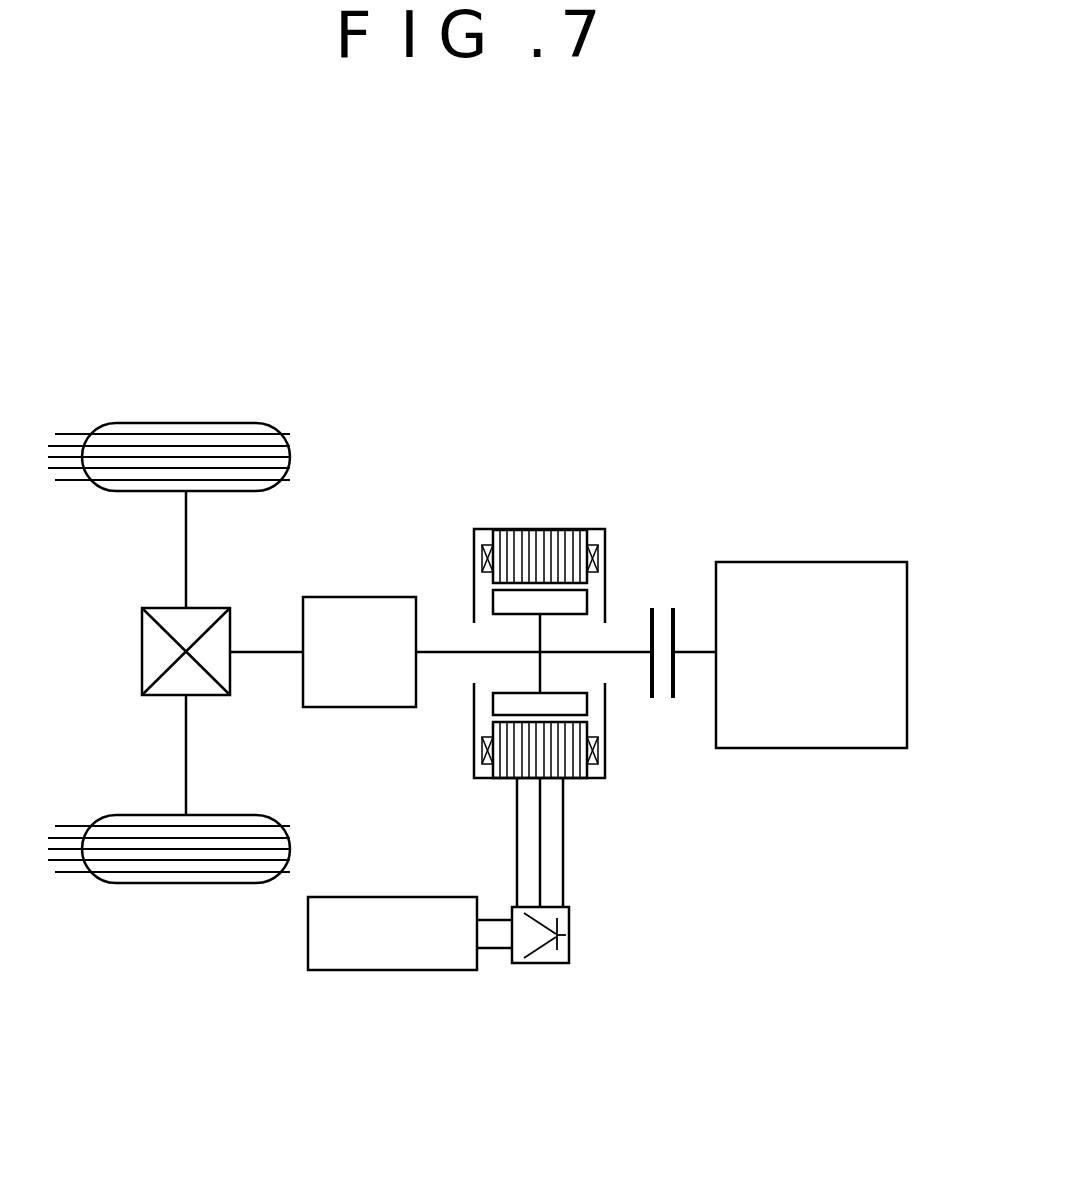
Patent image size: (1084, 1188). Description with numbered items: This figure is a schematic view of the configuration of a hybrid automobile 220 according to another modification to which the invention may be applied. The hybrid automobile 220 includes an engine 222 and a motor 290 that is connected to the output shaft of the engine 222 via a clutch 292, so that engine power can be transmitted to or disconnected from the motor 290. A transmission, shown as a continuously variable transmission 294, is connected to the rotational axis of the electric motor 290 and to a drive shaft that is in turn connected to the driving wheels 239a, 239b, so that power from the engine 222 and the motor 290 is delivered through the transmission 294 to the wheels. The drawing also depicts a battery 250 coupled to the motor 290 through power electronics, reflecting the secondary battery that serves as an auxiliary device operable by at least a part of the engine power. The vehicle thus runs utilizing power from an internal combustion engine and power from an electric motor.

The hybrid automobile 220 is at (585, 372).
The engine 222 is at (811, 748).
The driving wheel 239a is at (186, 423).
The driving wheel 239b is at (187, 883).
The battery 250 is at (391, 970).
The motor 290 is at (540, 529).
The clutch 292 is at (663, 606).
The continuously variable transmission (CVT) 294 is at (360, 597).